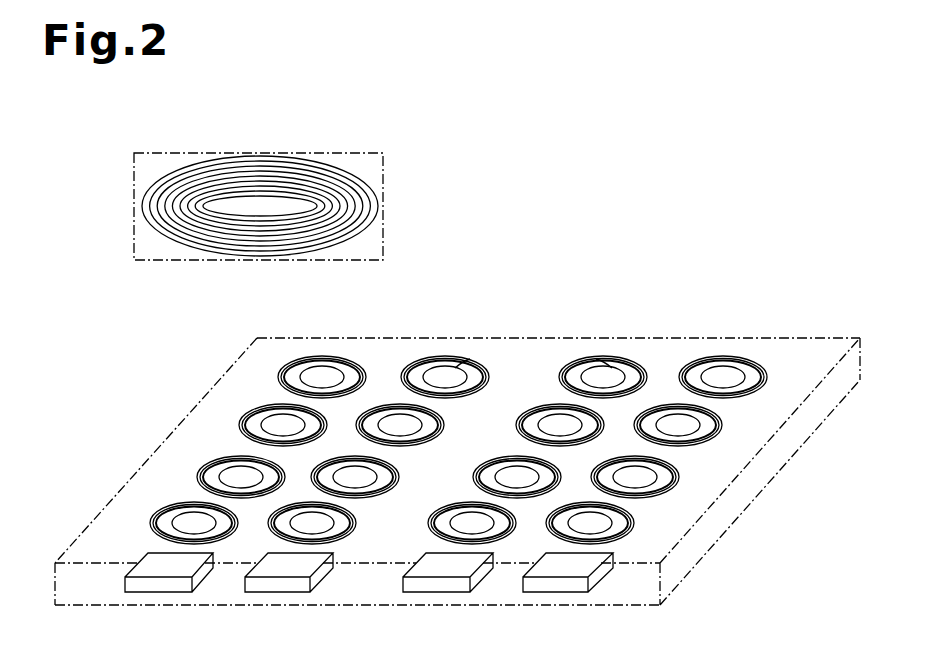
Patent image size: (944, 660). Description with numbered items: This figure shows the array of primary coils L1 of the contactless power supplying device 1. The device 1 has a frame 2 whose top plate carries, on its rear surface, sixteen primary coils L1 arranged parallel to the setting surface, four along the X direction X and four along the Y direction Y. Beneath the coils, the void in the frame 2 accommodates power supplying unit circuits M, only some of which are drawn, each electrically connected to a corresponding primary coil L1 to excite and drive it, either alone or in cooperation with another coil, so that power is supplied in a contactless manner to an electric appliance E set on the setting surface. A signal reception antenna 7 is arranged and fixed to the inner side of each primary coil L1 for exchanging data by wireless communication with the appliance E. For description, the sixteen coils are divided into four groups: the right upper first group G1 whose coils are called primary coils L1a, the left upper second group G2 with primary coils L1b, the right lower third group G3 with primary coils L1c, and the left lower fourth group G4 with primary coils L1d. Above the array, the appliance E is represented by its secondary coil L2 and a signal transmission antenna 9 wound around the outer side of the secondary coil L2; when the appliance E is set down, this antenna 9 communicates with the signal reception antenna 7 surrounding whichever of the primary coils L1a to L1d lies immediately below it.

The contactless power supplying device 1 is at (787, 312).
The frame 2 is at (795, 338).
The signal reception antenna 7 is at (588, 365).
The signal transmission antenna 9 is at (152, 228).
The electric appliance E is at (372, 147).
The primary coil L1 is at (416, 448).
The primary coil of first group L1a is at (705, 361).
The primary coil of second group L1b is at (432, 359).
The primary coil of third group L1c is at (634, 523).
The primary coil of fourth group L1d is at (155, 512).
The secondary coil L2 is at (237, 189).
The first group G1 is at (608, 321).
The second group G2 is at (309, 321).
The third group G3 is at (461, 484).
The fourth group G4 is at (125, 501).
The power supplying unit circuit M is at (247, 592).
The X direction X is at (770, 555).
The Y direction Y is at (770, 555).